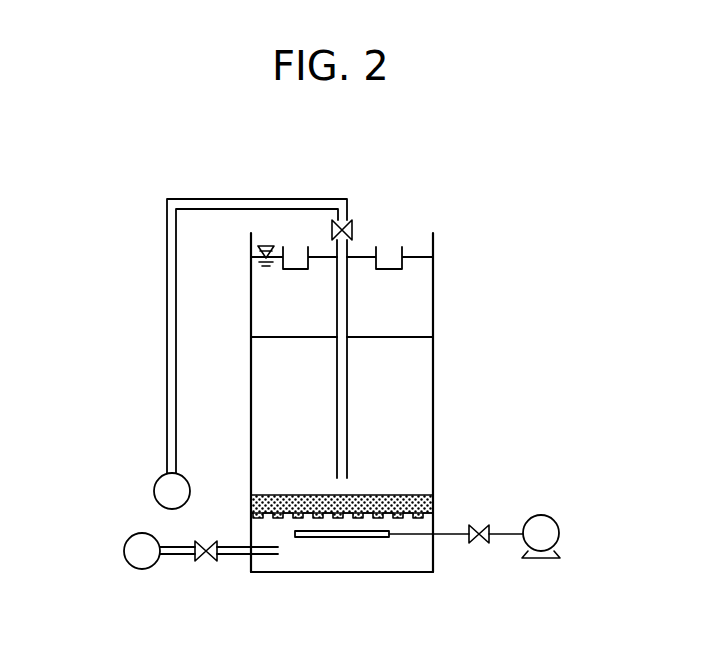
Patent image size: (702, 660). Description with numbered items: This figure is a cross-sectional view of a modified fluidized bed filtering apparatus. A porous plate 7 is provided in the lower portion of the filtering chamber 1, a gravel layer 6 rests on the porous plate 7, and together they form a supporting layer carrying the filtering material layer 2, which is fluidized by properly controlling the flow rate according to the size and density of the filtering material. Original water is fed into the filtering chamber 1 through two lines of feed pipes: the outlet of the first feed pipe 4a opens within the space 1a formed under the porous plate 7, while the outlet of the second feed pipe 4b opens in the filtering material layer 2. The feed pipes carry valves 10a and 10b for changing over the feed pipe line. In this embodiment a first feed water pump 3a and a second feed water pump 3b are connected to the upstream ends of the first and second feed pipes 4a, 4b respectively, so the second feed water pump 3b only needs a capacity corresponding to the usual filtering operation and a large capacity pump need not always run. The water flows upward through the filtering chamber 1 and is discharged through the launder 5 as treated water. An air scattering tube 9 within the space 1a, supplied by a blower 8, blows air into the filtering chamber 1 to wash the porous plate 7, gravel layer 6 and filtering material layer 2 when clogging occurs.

The filtering chamber 1 is at (433, 303).
The space 1a is at (410, 560).
The filtering material layer 2 is at (423, 392).
The first feed water pump 3a is at (124, 551).
The second feed water pump 3b is at (154, 490).
The first feed pipe 4a is at (240, 555).
The second feed pipe 4b is at (256, 199).
The launder 5 is at (402, 248).
The gravel layer 6 is at (433, 495).
The porous plate 7 is at (433, 513).
The blower 8 is at (559, 533).
The air scattering tube 9 is at (337, 540).
The valve 10a is at (206, 562).
The valve 10b is at (350, 227).